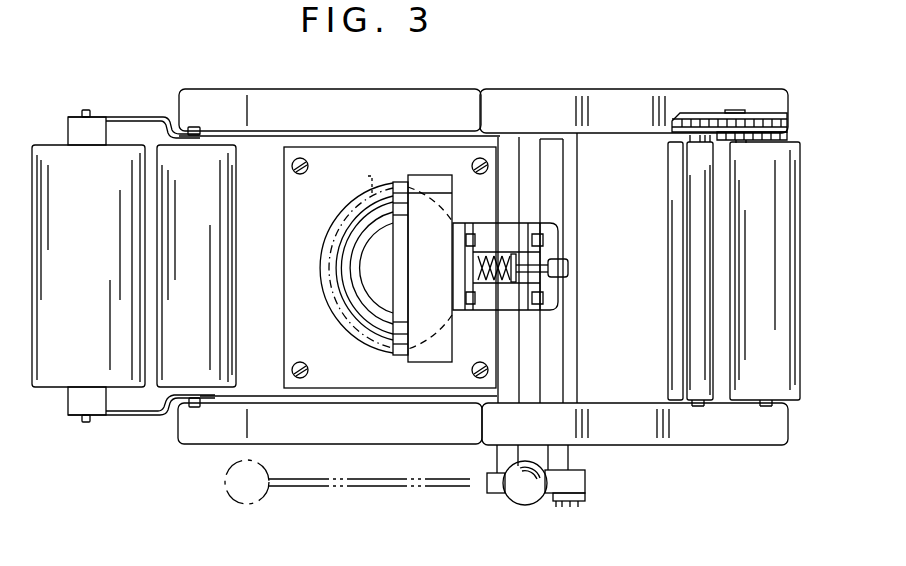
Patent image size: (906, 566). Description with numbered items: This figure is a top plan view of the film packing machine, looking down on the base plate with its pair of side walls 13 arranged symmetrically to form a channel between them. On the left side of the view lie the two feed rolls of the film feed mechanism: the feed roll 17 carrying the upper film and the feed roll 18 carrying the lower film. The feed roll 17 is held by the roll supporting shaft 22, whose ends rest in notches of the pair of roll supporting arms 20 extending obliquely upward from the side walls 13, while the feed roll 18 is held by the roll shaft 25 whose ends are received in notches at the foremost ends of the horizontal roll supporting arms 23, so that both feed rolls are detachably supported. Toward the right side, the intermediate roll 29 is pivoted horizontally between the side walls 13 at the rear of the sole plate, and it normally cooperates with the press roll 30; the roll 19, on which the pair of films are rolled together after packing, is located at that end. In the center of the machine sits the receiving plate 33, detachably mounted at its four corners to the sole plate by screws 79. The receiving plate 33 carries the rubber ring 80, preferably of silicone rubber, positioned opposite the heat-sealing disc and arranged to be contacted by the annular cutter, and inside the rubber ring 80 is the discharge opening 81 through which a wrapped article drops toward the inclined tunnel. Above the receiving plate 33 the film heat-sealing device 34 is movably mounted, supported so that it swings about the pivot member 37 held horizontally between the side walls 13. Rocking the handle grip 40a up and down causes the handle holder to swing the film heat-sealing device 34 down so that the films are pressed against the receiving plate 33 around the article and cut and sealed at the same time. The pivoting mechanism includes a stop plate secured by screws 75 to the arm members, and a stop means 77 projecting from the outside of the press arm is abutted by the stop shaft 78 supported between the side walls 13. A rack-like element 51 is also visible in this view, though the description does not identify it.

The side walls 13 is at (612, 105).
The feed roll 17 is at (217, 200).
The feed roll 18 is at (55, 380).
The roll 19 is at (753, 390).
The roll supporting arms 20 is at (268, 131).
The roll supporting shaft 22 is at (196, 408).
The roll supporting arms 23 is at (134, 113).
The roll shaft 25 is at (87, 423).
The intermediate roll 29 is at (680, 262).
The press roll 30 is at (702, 311).
The receiving plate 33 is at (296, 320).
The film heat-sealing device 34 is at (429, 174).
The pivot member 37 is at (512, 354).
The handle grip 40a is at (525, 497).
The rack 51 is at (707, 123).
The screws 75 is at (545, 242).
The stop means 77 is at (570, 268).
The stop shaft 78 is at (572, 190).
The screws 79 is at (292, 367).
The rubber ring 80 is at (323, 258).
The discharge opening 81 is at (373, 300).